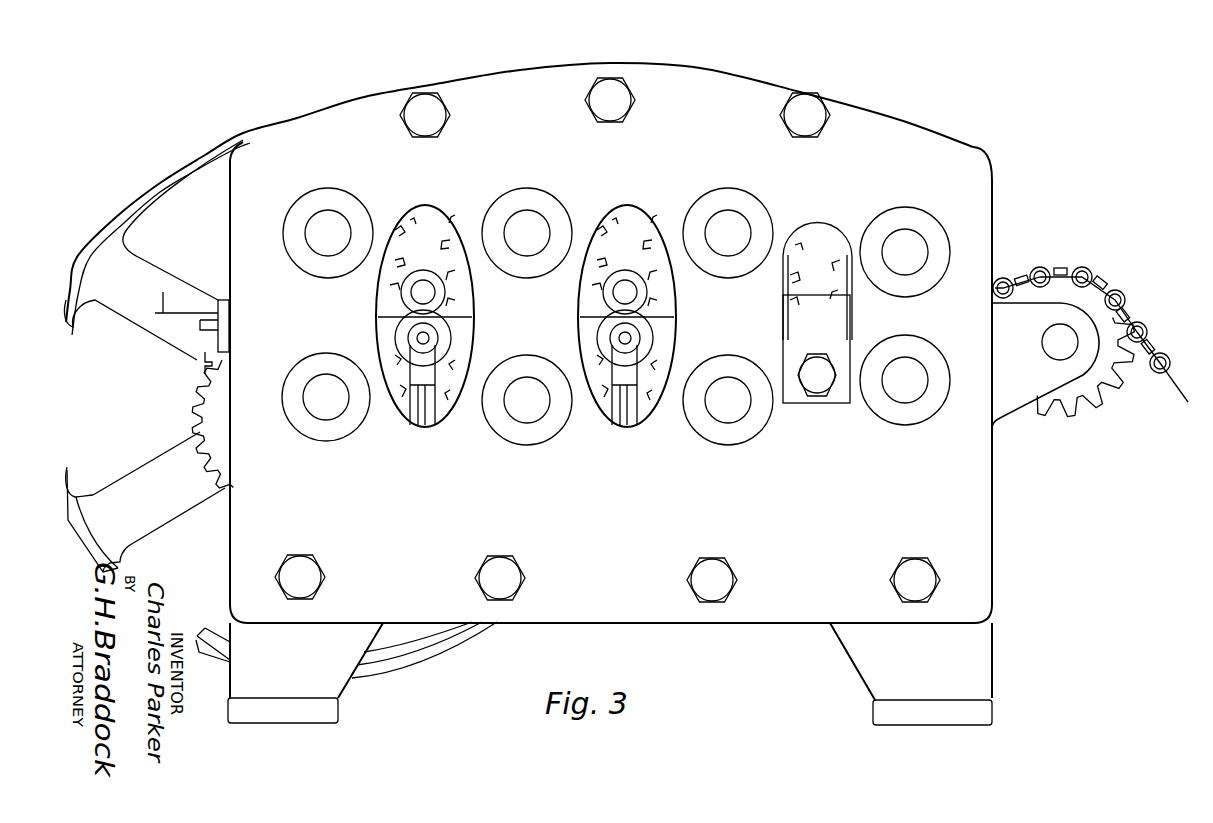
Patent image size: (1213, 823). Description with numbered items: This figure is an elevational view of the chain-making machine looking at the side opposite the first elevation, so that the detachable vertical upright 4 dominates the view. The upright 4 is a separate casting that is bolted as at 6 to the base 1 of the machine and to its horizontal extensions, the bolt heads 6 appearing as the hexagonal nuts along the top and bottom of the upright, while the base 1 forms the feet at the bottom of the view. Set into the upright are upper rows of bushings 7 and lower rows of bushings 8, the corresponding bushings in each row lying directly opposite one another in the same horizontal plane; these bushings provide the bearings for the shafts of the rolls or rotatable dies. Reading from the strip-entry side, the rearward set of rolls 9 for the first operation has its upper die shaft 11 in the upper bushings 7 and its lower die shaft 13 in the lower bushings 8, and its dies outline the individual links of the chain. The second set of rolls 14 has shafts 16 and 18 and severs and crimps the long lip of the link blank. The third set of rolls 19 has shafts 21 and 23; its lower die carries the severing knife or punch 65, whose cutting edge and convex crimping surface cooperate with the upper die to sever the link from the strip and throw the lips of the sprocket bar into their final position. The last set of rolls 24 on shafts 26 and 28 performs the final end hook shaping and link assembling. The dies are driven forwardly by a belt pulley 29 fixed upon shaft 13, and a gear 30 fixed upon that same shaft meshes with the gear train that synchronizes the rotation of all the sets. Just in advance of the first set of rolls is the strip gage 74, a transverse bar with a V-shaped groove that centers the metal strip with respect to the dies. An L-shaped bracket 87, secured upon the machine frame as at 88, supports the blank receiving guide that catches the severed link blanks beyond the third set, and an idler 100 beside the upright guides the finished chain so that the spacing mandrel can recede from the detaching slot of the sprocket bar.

The base 1 is at (328, 683).
The vertical upright 4 is at (245, 203).
The bolts 6 is at (428, 108).
The upper rows of bushings 7 is at (332, 212).
The lower rows of bushings 8 is at (322, 438).
The rearward set of rolls 9 is at (380, 272).
The shaft 11 is at (320, 235).
The shaft 13 is at (320, 400).
The second set of rolls 14 is at (590, 276).
The shaft 16 is at (520, 228).
The shaft 18 is at (518, 408).
The third set of rolls 19 is at (790, 265).
The shaft 21 is at (718, 228).
The shaft 23 is at (718, 410).
The last set of rolls 24 is at (852, 298).
The shaft 26 is at (912, 251).
The shaft 28 is at (905, 395).
The belt pulley 29 is at (152, 468).
The gear 30 is at (197, 398).
The severing knife or punch 65 is at (660, 352).
The strip gage 74 is at (220, 300).
The L-shaped bracket 87 is at (783, 345).
The bracket fastening 88 is at (812, 385).
The idler 100 is at (1060, 412).